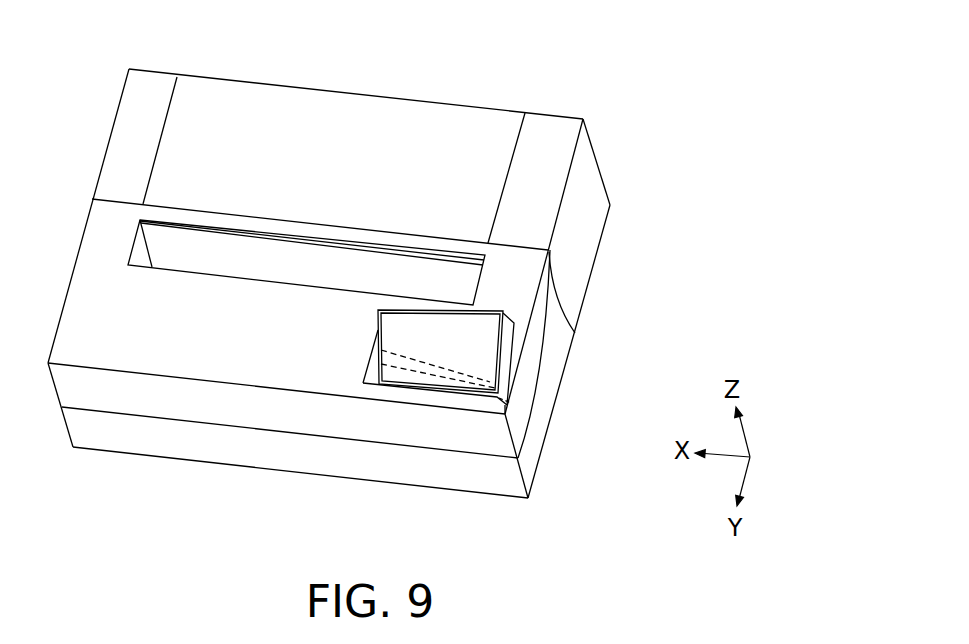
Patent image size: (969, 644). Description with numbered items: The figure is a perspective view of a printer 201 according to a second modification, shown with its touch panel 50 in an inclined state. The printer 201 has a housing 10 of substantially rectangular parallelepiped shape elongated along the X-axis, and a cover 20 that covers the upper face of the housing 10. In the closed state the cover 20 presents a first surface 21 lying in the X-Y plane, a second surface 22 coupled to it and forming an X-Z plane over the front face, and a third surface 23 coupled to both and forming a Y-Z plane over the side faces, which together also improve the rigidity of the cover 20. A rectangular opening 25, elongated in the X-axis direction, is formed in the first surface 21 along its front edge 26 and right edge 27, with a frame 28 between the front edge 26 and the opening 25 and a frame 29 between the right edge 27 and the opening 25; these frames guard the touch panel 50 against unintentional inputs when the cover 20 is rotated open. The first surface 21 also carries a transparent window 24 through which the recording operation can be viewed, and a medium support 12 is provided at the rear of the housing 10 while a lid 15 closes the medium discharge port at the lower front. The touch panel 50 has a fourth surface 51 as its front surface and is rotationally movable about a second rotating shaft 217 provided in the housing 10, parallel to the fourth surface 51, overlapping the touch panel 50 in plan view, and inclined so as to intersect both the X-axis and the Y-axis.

The printer 201 is at (598, 75).
The housing 10 is at (565, 408).
The medium support 12 is at (338, 110).
The lid 15 is at (248, 467).
The cover 20 is at (78, 213).
The first surface 21 is at (80, 295).
The second surface 22 is at (390, 428).
The third surface 23 is at (522, 401).
The window 24 is at (250, 255).
The opening 25 is at (376, 350).
The front edge 26 is at (153, 377).
The right edge 27 is at (537, 310).
The frame 28 is at (400, 394).
The frame 29 is at (510, 359).
The touch panel 50 is at (368, 320).
The fourth surface 51 is at (448, 333).
The second rotating shaft 217 is at (468, 397).